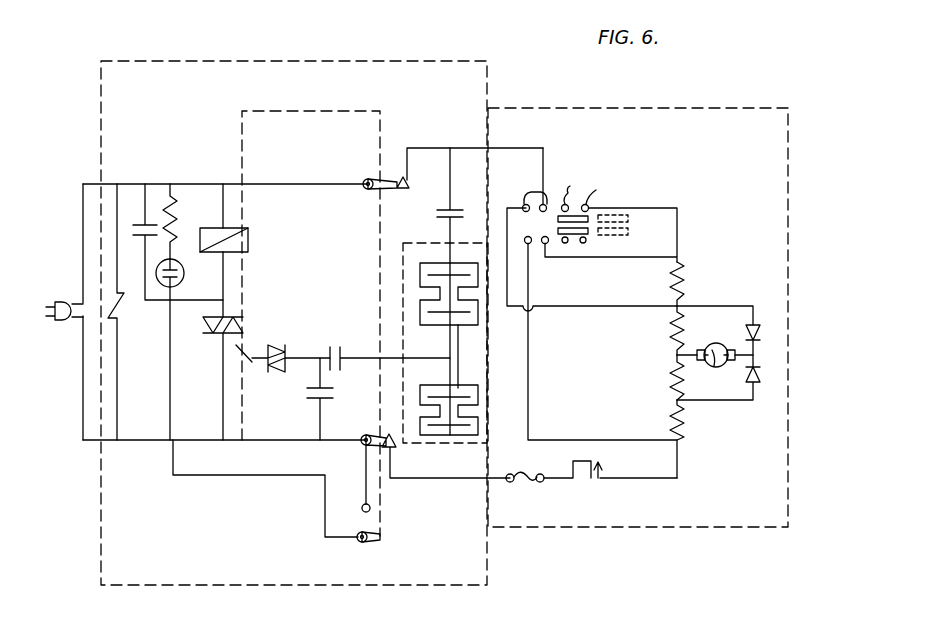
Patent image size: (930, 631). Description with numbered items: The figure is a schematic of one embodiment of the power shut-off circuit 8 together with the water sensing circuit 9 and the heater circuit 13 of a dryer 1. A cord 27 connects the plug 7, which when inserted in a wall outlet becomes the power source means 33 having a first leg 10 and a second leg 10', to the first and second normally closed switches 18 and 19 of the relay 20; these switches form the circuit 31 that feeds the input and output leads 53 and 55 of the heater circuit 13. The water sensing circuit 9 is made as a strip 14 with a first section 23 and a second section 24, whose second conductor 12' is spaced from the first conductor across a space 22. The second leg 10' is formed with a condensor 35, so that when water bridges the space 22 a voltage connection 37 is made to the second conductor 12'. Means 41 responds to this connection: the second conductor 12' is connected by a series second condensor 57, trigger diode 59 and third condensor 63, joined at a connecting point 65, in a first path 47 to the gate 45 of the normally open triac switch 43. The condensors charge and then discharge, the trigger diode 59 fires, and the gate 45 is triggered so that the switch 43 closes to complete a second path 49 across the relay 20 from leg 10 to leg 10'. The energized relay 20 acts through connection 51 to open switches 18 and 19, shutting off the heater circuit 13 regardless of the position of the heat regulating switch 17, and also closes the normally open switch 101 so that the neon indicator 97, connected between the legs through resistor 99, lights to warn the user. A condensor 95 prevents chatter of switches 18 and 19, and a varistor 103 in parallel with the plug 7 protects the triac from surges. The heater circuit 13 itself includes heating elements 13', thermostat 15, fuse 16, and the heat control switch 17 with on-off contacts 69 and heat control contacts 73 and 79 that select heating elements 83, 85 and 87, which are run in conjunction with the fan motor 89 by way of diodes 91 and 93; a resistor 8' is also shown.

The dryer 1 is at (805, 240).
The plug 7 is at (66, 302).
The power shut-off circuit 8 is at (313, 313).
The resistor 8' is at (702, 279).
The water sensing circuit 9 is at (403, 243).
The first leg 10 is at (30, 337).
The second leg 10' is at (33, 281).
The second conductor 12' is at (438, 329).
The heater circuit 13 is at (638, 296).
The heating elements 13' is at (698, 267).
The strip 14 is at (472, 392).
The thermostat 15 is at (584, 480).
The fuse 16 is at (528, 484).
The heat regulating switch 17 is at (590, 207).
The first normally closed switch 18 is at (365, 178).
The second normally closed switch 19 is at (342, 413).
The relay 20 is at (246, 236).
The space 22 is at (462, 346).
The first section 23 is at (420, 262).
The second section 24 is at (448, 437).
The cord 27 is at (72, 322).
The circuit 31 is at (278, 183).
The power source means 33 is at (58, 296).
The condensor 35 is at (452, 207).
The voltage connection 37 is at (470, 428).
The means responsive to the voltage connection 41 is at (334, 343).
The normally open switch 43 is at (229, 316).
The gate 45 is at (240, 351).
The first path 47 is at (252, 365).
The second path 49 is at (226, 276).
The connection 51 is at (298, 110).
The input lead 53 is at (543, 150).
The output lead 55 is at (399, 486).
The second condensor 57 is at (342, 368).
The trigger diode 59 is at (262, 360).
The third condensor 63 is at (310, 386).
The connecting point 65 is at (320, 346).
The on-off contacts 69 is at (569, 187).
The heat control contact 73 is at (598, 191).
The heat control contact 79 is at (538, 198).
The heating element 83 is at (683, 320).
The heating element 85 is at (672, 378).
The heating element 87 is at (672, 412).
The fan motor 89 is at (715, 369).
The diode 91 is at (755, 324).
The diode 93 is at (758, 390).
The condensor 95 is at (140, 222).
The indicator 97 is at (180, 276).
The resistor 99 is at (172, 208).
The normally open switch 101 is at (368, 548).
The varistor 103 is at (118, 318).